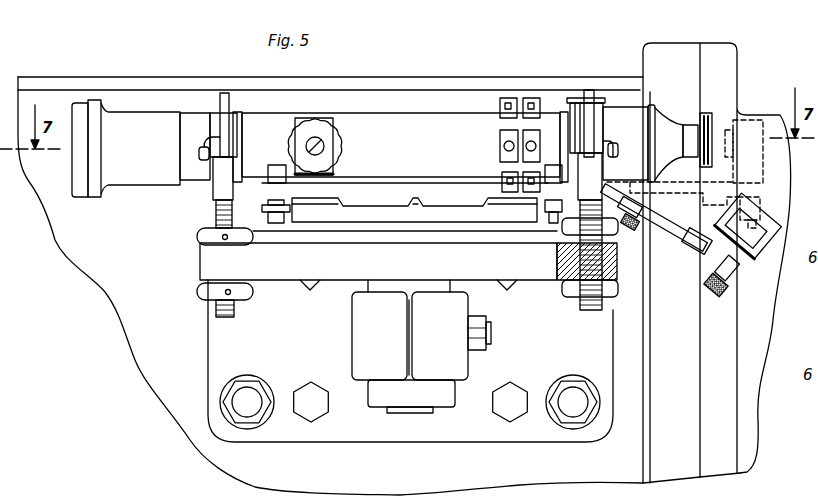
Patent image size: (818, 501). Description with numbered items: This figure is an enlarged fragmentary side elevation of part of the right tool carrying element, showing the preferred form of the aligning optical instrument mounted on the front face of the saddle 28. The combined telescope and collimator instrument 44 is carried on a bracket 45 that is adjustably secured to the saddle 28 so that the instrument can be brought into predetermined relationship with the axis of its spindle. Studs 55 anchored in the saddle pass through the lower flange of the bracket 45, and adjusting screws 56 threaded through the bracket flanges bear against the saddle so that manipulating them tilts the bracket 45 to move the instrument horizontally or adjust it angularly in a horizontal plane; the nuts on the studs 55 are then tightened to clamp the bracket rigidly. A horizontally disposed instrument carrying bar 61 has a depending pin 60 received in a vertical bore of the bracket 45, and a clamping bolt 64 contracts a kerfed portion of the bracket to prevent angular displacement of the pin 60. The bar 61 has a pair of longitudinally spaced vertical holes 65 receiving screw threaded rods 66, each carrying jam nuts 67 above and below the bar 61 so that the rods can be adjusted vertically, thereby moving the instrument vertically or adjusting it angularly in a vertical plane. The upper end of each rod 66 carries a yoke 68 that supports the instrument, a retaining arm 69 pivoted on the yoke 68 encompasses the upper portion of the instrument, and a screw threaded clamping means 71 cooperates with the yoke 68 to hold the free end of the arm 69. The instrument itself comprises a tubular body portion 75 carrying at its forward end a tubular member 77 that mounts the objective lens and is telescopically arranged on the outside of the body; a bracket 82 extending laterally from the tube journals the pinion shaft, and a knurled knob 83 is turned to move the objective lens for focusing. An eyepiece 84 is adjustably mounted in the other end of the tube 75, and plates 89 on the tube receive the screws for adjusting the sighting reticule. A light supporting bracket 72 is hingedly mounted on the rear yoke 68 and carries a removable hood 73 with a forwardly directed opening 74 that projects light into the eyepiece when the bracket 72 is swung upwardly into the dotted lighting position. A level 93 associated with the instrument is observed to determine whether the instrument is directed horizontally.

The saddle 28 is at (131, 305).
The combined telescope and collimator instrument 44 is at (389, 109).
The bracket 45 is at (448, 430).
The studs 55 is at (249, 395).
The adjusting screws 56 is at (313, 290).
The depending pin 60 is at (405, 414).
The instrument carrying bar 61 is at (283, 272).
The clamping bolt 64 is at (482, 326).
The holes 65 is at (577, 259).
The screw threaded rods 66 is at (216, 216).
The jam nuts 67 is at (240, 288).
The yoke 68 is at (222, 183).
The retaining arm 69 is at (225, 93).
The screw threaded clamping means 71 is at (205, 147).
The light supporting bracket 72 is at (677, 223).
The removable hood 73 is at (766, 224).
The forwardly directed opening 74 is at (733, 211).
The tubular body portion 75 is at (428, 125).
The tubular member 77 is at (137, 170).
The bracket 82 is at (336, 122).
The knurled knob 83 is at (337, 150).
The eyepiece 84 is at (706, 110).
The plates 89 is at (501, 170).
The level 93 is at (430, 198).